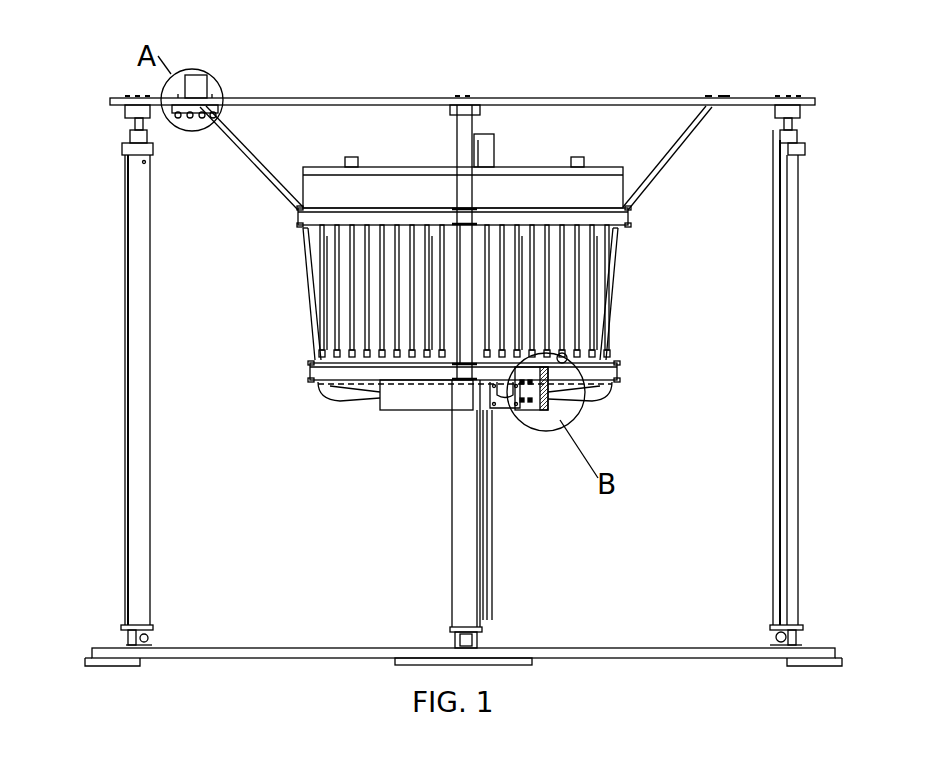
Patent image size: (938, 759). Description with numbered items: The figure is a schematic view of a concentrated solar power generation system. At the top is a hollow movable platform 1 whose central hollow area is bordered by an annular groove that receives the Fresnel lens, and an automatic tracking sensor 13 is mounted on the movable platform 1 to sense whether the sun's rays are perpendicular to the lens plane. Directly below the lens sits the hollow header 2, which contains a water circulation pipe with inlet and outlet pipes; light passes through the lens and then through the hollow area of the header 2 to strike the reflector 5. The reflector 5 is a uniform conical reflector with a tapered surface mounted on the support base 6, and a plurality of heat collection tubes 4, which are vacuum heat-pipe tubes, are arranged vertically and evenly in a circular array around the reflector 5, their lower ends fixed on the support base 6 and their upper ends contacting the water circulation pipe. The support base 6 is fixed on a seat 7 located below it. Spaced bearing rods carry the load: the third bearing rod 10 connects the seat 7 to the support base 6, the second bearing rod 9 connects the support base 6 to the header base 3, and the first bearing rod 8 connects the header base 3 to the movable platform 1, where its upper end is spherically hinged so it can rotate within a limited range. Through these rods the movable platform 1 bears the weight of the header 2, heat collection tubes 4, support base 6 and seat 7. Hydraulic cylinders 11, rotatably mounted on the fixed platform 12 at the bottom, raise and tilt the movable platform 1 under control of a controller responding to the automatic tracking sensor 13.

The movable platform 1 is at (322, 98).
The header 2 is at (393, 190).
The header base 3 is at (527, 215).
The heat collection tubes 4 is at (575, 283).
The reflector 5 is at (433, 318).
The support base 6 is at (343, 368).
The seat 7 is at (432, 400).
The first bearing rod 8 is at (262, 168).
The second bearing rod 9 is at (322, 310).
The third bearing rod 10 is at (346, 396).
The hydraulic cylinder 11 is at (137, 310).
The fixed platform 12 is at (582, 655).
The automatic tracking sensor 13 is at (197, 85).